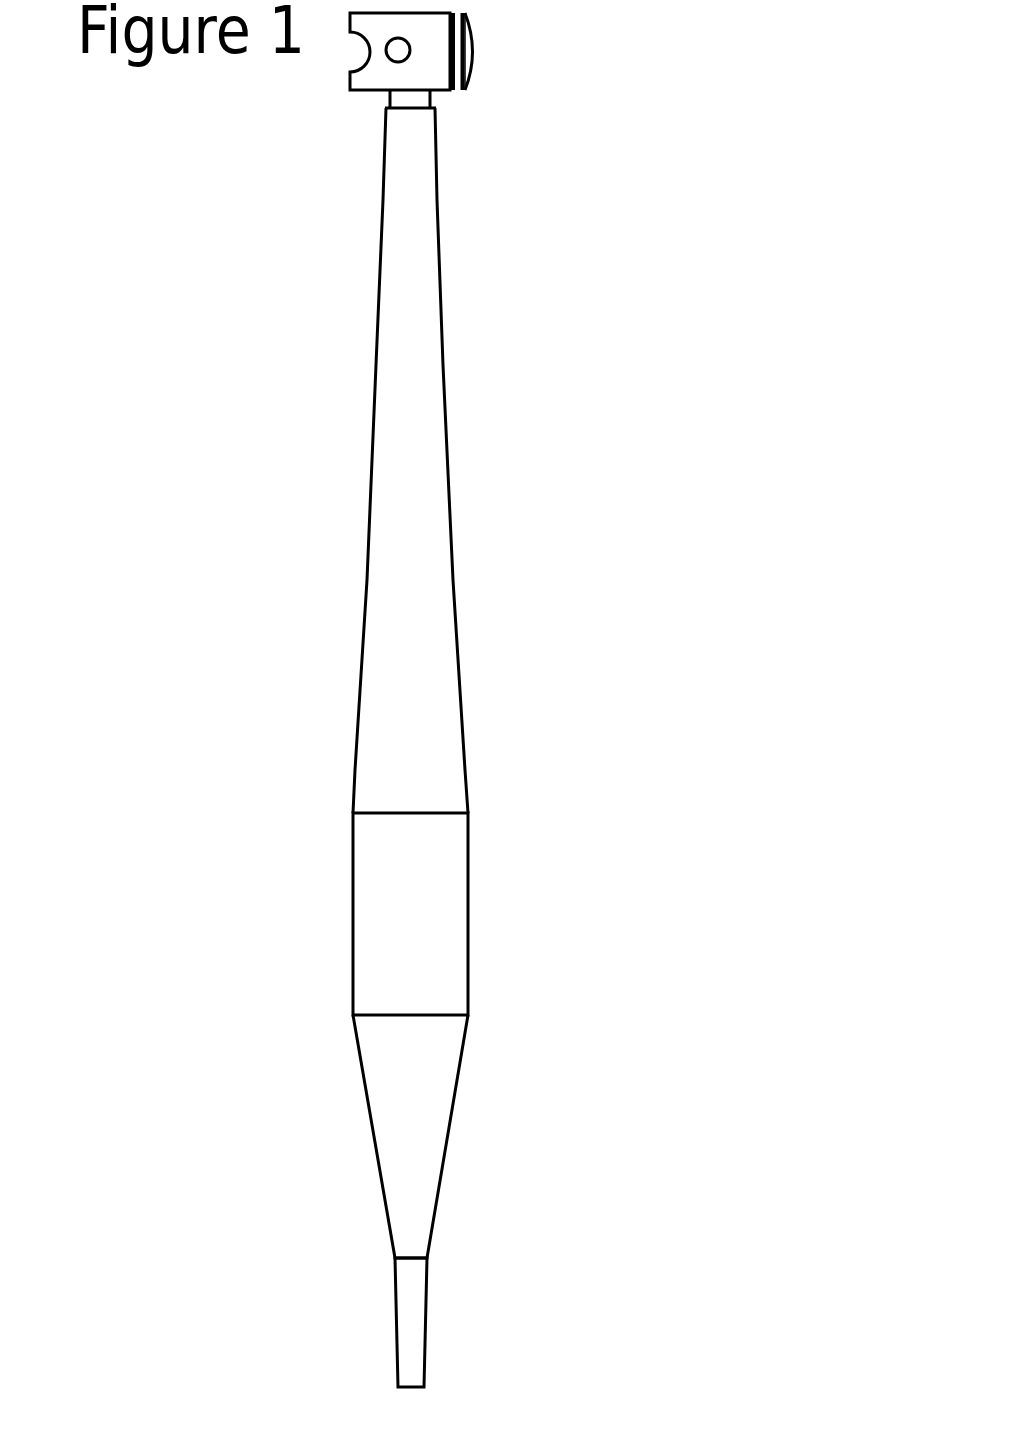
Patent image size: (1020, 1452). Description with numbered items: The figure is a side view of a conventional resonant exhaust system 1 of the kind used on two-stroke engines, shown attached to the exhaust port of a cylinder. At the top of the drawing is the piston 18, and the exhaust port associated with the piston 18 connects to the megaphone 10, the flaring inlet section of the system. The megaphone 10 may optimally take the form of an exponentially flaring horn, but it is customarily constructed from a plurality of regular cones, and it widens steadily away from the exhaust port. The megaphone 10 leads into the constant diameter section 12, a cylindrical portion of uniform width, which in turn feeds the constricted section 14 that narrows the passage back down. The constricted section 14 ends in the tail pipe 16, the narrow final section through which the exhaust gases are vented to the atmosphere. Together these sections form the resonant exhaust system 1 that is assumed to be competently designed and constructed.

The conventional resonant exhaust system 1 is at (500, 634).
The megaphone 10 is at (412, 360).
The constant diameter section 12 is at (433, 897).
The constricted section 14 is at (420, 1113).
The tail pipe 16 is at (415, 1315).
The piston 18 is at (480, 53).